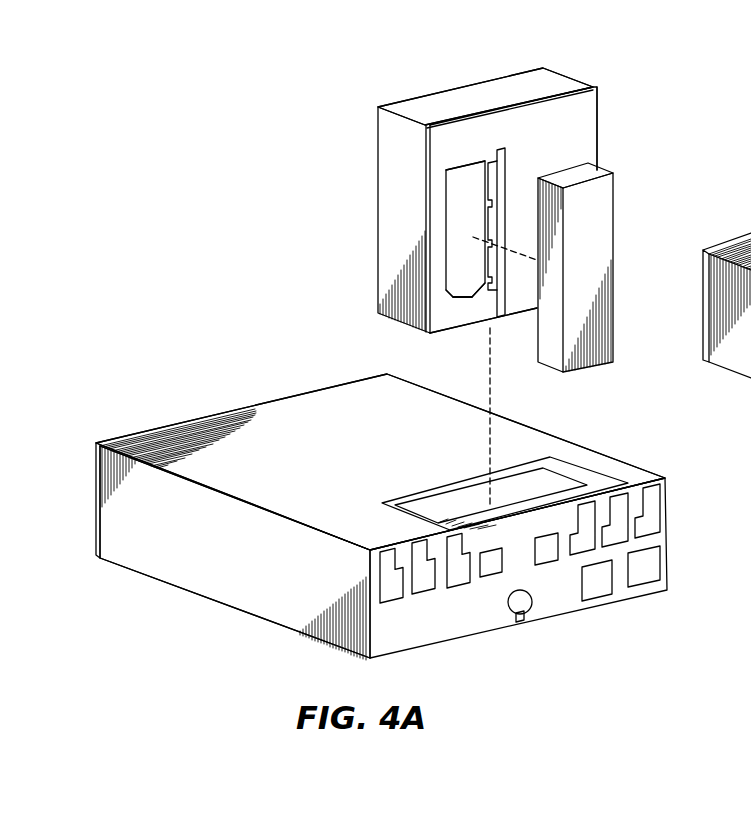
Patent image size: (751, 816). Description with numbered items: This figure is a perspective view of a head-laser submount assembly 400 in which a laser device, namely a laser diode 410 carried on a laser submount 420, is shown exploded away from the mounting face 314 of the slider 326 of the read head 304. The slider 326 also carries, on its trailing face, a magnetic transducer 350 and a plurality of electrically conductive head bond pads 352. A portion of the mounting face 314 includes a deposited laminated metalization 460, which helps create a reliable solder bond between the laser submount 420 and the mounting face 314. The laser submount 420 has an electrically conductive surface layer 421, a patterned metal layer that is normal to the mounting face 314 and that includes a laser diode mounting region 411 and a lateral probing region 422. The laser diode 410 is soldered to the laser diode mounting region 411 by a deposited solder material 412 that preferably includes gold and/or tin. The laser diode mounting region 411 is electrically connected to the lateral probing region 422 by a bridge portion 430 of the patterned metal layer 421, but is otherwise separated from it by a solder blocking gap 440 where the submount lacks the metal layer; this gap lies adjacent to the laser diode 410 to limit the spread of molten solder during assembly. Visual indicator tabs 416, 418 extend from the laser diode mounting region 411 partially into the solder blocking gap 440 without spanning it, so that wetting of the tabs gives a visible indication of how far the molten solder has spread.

The head-laser submount assembly 400 is at (202, 172).
The read head 304 is at (345, 420).
The mounting face 314 is at (225, 445).
The slider 326 is at (188, 573).
The magnetic transducer 350 is at (528, 610).
The head bond pads 352 is at (392, 590).
The deposited laminated metalization 460 is at (552, 483).
The laser diode 410 is at (597, 203).
The laser diode mounting region 411 is at (443, 312).
The deposited solder material 412 is at (453, 207).
The visual indicator tab 416 is at (495, 308).
The visual indicator tab 418 is at (503, 200).
The laser submount 420 is at (415, 107).
The electrically conductive surface layer 421 is at (550, 97).
The lateral probing region 422 is at (575, 133).
The bridge portion 430 is at (505, 135).
The solder blocking gap 440 is at (445, 180).